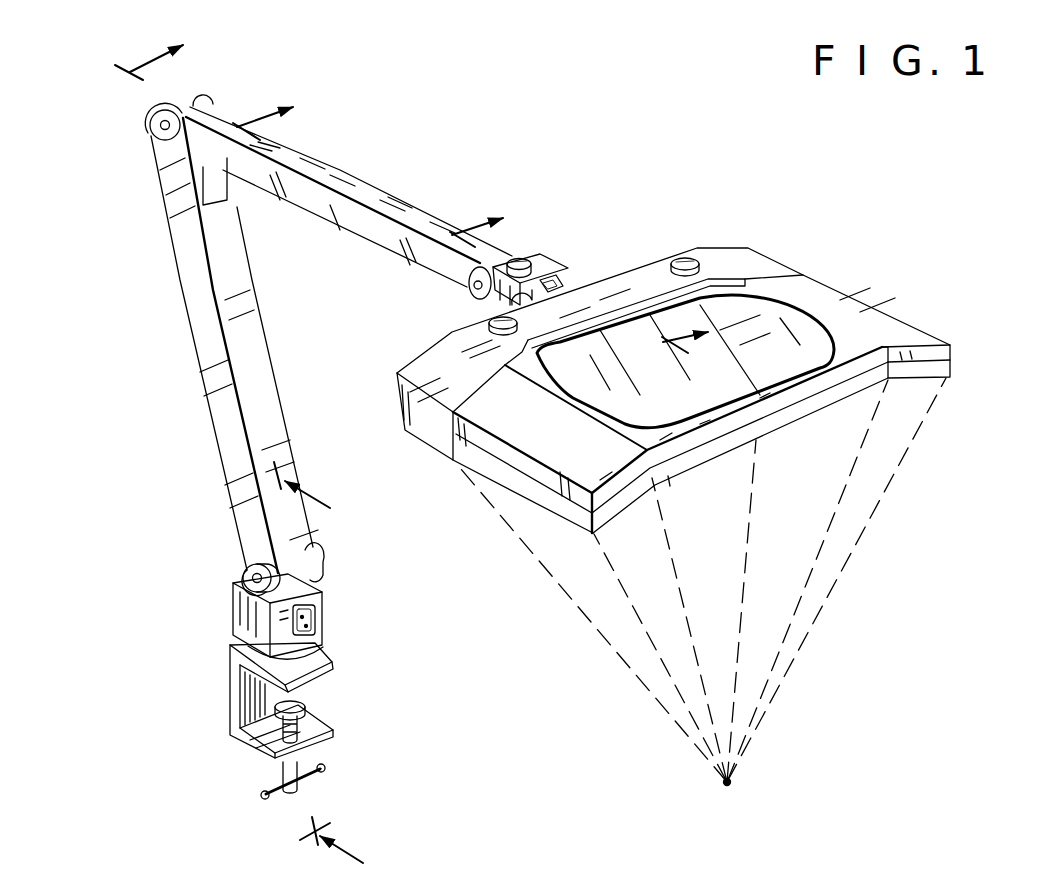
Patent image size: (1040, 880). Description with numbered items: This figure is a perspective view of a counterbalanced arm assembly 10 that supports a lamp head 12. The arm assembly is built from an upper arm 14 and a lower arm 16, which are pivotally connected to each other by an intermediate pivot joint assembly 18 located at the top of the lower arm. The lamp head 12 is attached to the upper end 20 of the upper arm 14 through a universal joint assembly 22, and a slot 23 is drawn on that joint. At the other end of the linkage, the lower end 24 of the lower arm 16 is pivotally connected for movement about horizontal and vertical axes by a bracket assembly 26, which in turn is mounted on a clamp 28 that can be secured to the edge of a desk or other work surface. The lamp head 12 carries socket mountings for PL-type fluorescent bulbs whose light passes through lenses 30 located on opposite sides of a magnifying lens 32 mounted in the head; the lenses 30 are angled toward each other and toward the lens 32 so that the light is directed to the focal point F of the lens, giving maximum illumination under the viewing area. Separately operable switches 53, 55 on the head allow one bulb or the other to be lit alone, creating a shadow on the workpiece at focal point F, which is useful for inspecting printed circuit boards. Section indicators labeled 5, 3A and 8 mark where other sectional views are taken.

The counterbalanced arm assembly 10 is at (668, 156).
The lamp head 12 is at (830, 290).
The upper arm 14 is at (374, 174).
The lower arm 16 is at (153, 308).
The intermediate pivot joint assembly 18 is at (129, 121).
The upper end of arm 20 is at (506, 257).
The universal joint assembly 22 is at (554, 262).
The slot in bracket 23 is at (557, 287).
The lower end of arm 24 is at (233, 537).
The bracket assembly 26 is at (335, 607).
The clamp 28 is at (335, 690).
The lenses 30 is at (952, 368).
The magnifying lens 32 is at (793, 353).
The switch 53 is at (492, 318).
The switch 55 is at (684, 257).
The focal point F is at (735, 782).
The section line 5- 5 is at (217, 76).
The section line 3A- 3A is at (603, 271).
The section line 8- 8 is at (329, 671).